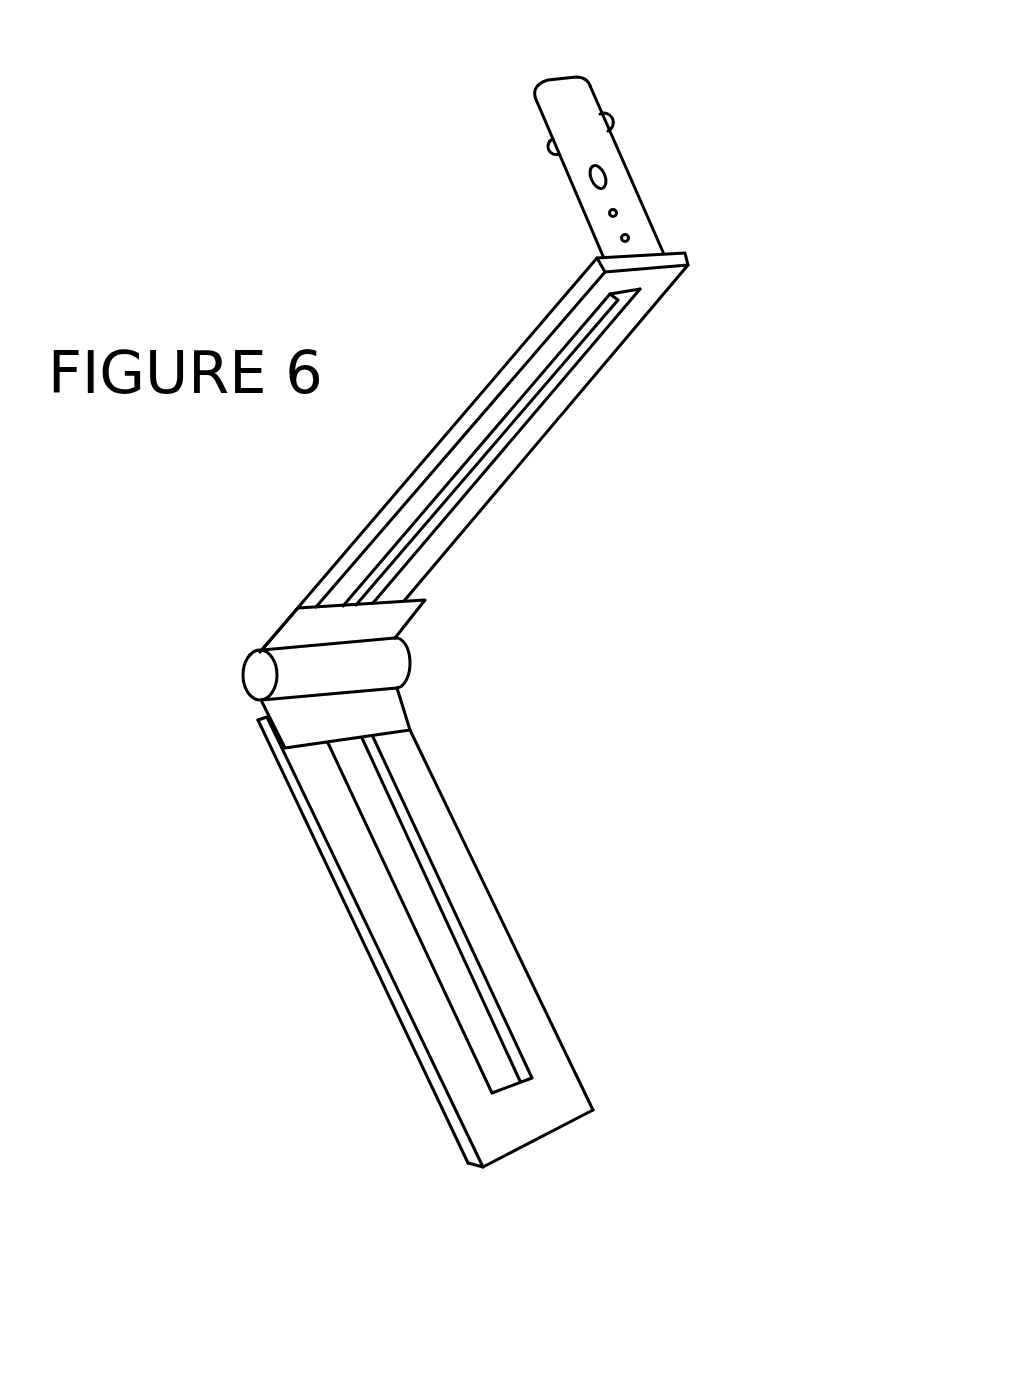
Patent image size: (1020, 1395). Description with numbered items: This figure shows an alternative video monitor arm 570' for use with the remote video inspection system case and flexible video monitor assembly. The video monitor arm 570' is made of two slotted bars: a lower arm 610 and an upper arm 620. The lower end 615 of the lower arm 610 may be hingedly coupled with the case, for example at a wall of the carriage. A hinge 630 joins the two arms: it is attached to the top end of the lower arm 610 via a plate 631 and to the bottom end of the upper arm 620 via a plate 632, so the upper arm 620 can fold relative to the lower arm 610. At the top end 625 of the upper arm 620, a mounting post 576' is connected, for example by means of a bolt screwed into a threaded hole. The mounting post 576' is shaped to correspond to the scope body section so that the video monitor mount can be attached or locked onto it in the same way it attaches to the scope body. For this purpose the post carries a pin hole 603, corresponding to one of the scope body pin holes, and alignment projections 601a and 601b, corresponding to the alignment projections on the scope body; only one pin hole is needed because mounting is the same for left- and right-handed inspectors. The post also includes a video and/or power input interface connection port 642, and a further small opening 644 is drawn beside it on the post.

The video monitor arm 570' is at (507, 619).
The mounting post 576' is at (647, 139).
The alignment projection 601a is at (550, 148).
The alignment projection 601b is at (612, 125).
The pin hole 603 is at (607, 175).
The video and/or power input interface connection port 642 is at (609, 213).
The hole 644 is at (621, 238).
The top end 625 is at (677, 251).
The upper arm 620 is at (542, 450).
The plate 632 is at (290, 624).
The hinge 630 is at (413, 668).
The plate 631 is at (293, 725).
The lower arm 610 is at (524, 953).
The lower end 615 is at (543, 1147).